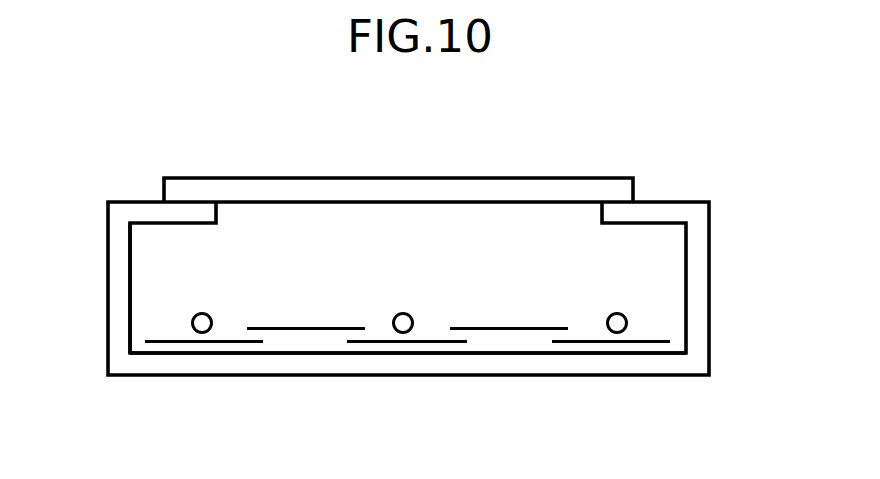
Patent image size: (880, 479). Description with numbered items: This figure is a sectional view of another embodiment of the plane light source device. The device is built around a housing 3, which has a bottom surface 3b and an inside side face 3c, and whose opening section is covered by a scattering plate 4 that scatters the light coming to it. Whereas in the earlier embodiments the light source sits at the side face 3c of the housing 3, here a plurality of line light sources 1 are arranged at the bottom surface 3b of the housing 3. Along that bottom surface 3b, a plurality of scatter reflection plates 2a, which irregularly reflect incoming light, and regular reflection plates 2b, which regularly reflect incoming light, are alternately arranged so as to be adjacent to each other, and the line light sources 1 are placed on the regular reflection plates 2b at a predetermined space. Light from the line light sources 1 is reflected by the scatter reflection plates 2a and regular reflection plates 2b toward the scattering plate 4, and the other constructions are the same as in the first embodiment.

The line light source 1 is at (620, 316).
The scatter reflection plate 2a is at (330, 329).
The regular reflection plate 2b is at (228, 341).
The housing 3 is at (118, 271).
The bottom surface 3b is at (527, 352).
The side face 3c is at (128, 330).
The scattering plate 4 is at (435, 190).